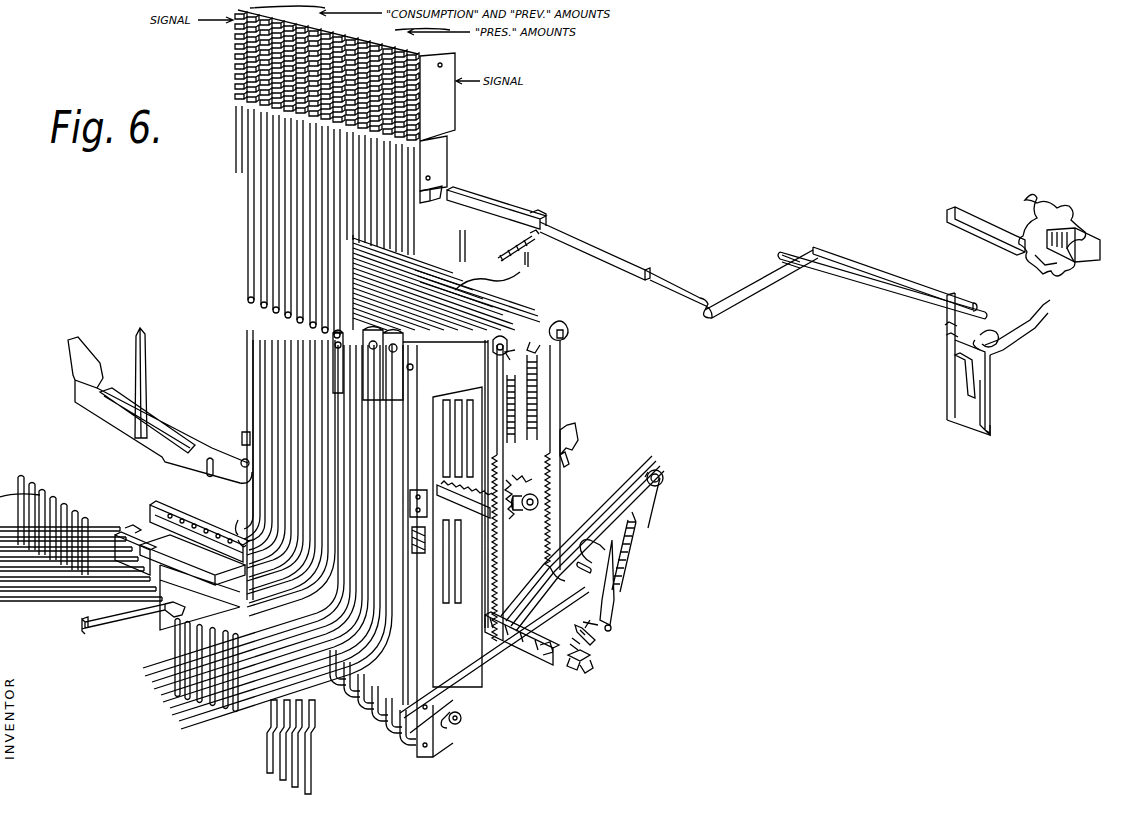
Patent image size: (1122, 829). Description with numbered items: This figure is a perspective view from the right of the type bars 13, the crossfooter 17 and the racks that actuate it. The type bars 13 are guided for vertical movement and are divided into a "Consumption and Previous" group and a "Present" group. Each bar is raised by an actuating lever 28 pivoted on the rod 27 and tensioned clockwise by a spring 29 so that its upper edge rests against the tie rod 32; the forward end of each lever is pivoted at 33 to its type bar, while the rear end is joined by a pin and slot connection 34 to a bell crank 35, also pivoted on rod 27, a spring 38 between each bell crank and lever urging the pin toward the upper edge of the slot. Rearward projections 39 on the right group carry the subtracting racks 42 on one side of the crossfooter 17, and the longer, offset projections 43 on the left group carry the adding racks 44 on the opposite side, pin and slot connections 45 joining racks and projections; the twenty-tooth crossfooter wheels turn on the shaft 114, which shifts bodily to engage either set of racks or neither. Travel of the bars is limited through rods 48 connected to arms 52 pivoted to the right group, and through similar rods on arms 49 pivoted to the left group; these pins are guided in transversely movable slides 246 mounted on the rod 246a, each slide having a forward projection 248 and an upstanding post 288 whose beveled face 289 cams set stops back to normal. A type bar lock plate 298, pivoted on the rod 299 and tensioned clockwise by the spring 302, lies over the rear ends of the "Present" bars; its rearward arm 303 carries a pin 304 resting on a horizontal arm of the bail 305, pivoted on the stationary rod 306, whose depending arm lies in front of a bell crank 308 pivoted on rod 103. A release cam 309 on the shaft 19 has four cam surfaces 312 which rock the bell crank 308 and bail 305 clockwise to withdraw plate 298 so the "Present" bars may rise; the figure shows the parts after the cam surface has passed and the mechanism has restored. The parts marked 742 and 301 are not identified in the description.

The type bars 13 is at (292, 258).
The rod 299 is at (497, 208).
The spring 302 is at (525, 262).
The type bar lock plate 298 is at (515, 277).
The rearwardly projecting arm 303 is at (600, 270).
The pin 304 is at (634, 282).
The bail 305 is at (915, 277).
The rod 306 is at (893, 302).
The rod 103 is at (945, 345).
The pawl 742 is at (950, 380).
The bracket foot 301 is at (947, 405).
The bell crank 308 is at (1000, 349).
The shaft 19 is at (979, 212).
The release cam 309 is at (1062, 183).
The cam surfaces 312 is at (1063, 293).
The rearward projections 39 is at (472, 376).
The crossfooter 17 is at (540, 546).
The subtracting racks 42 is at (488, 602).
The offset projections 43 is at (455, 277).
The pin and slot connections 45 is at (562, 336).
The adding racks 44 is at (560, 430).
The shaft 114 is at (533, 502).
The pin and slot connection 34 is at (660, 490).
The springs 38 is at (630, 550).
The rod 27 is at (610, 604).
The bell crank 35 is at (612, 618).
The actuating levers 28 is at (570, 635).
The springs 29 is at (571, 672).
The tie rod 32 is at (525, 663).
The pivot 33 is at (460, 720).
The slides 246 is at (170, 502).
The rod 246a is at (127, 508).
The arms 49 is at (97, 553).
The beveled faces 289 is at (241, 509).
The upstanding posts 288 is at (240, 526).
The arms 52 is at (272, 688).
The forwardly extending projection 248 is at (166, 617).
The rods 48 is at (180, 655).